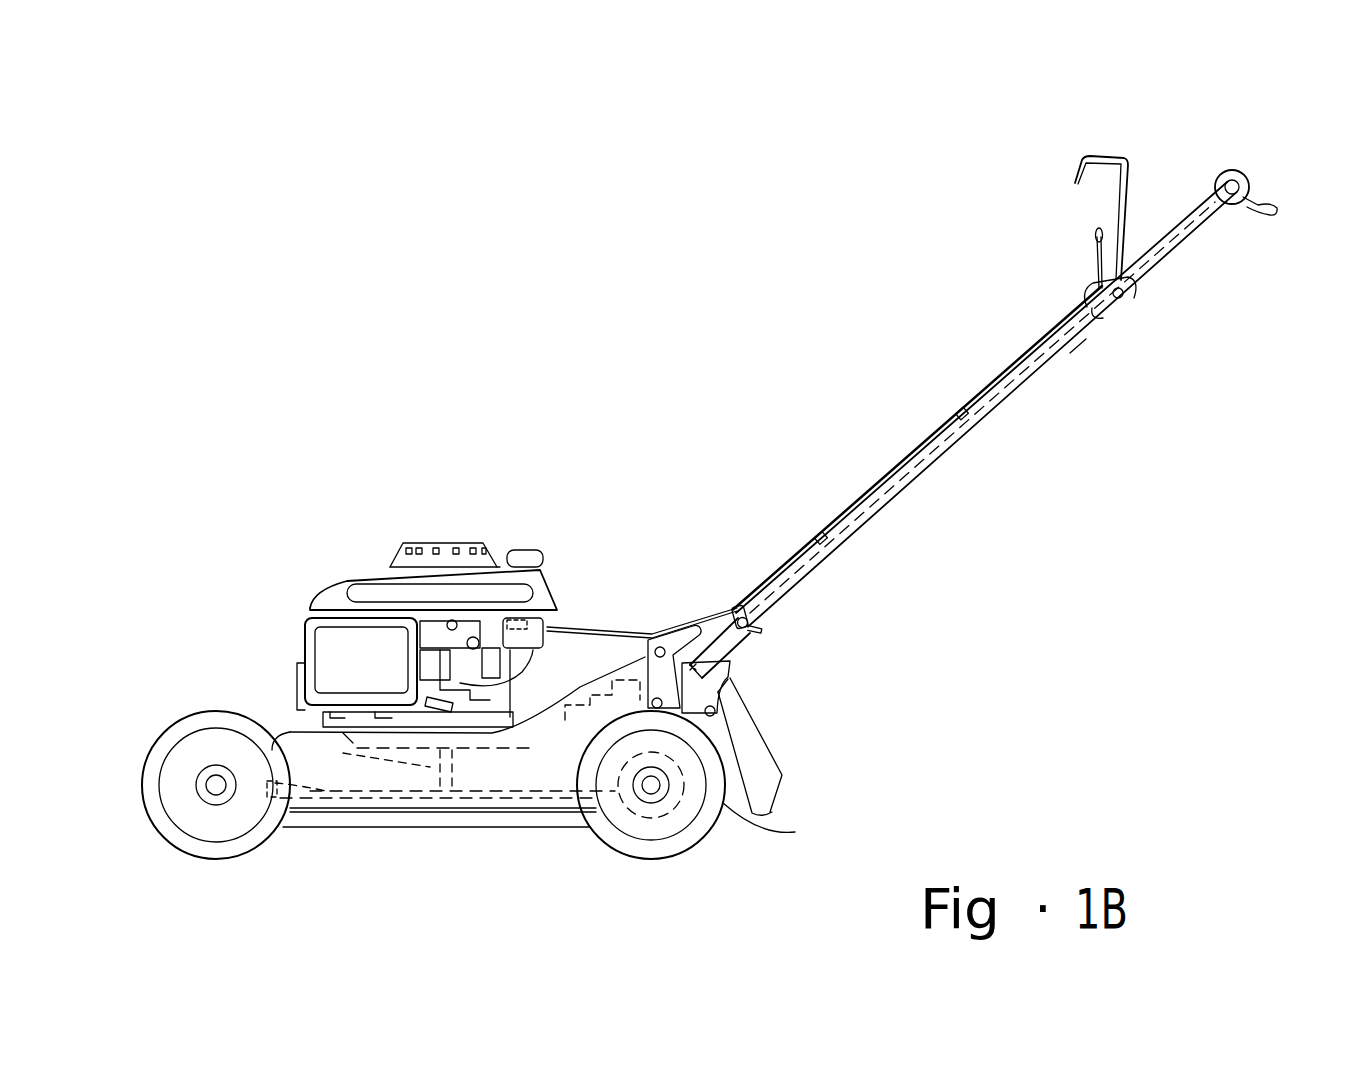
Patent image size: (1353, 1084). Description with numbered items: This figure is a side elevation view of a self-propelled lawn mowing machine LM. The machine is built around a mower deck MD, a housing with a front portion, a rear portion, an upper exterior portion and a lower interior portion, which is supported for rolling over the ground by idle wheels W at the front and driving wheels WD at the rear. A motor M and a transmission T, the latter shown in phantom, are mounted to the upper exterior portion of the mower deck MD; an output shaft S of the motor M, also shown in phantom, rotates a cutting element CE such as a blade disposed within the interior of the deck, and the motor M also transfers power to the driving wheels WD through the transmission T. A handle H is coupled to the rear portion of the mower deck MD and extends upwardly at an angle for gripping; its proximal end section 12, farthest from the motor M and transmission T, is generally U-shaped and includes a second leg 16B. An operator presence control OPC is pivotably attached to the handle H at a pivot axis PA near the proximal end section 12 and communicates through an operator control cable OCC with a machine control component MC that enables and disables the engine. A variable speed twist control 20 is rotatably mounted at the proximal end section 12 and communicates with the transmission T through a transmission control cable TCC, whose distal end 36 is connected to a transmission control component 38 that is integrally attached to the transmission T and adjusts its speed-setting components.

The lawn mowing machine LM is at (368, 425).
The wheels W is at (156, 752).
The driving wheels WD is at (708, 836).
The mower deck MD is at (272, 730).
The output shaft S is at (425, 768).
The cutting element CE is at (465, 795).
The motor M is at (337, 578).
The machine control component MC is at (496, 550).
The transmission T is at (590, 757).
The transmission control component 38 is at (652, 770).
The distal end of transmission control cable 36 is at (660, 680).
The handle H is at (935, 490).
The transmission control cable TCC is at (1035, 388).
The operator control cable OCC is at (950, 415).
The second leg 16B is at (1070, 353).
The pivot axis PA is at (1122, 300).
The operator presence control OPC is at (1108, 158).
The proximal end section 12 is at (1187, 256).
The variable speed twist control 20 is at (1242, 165).